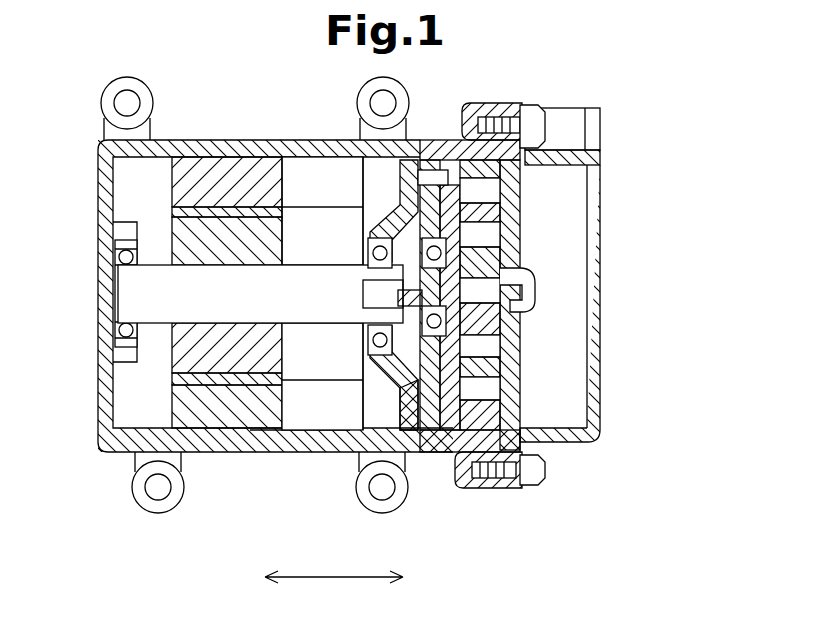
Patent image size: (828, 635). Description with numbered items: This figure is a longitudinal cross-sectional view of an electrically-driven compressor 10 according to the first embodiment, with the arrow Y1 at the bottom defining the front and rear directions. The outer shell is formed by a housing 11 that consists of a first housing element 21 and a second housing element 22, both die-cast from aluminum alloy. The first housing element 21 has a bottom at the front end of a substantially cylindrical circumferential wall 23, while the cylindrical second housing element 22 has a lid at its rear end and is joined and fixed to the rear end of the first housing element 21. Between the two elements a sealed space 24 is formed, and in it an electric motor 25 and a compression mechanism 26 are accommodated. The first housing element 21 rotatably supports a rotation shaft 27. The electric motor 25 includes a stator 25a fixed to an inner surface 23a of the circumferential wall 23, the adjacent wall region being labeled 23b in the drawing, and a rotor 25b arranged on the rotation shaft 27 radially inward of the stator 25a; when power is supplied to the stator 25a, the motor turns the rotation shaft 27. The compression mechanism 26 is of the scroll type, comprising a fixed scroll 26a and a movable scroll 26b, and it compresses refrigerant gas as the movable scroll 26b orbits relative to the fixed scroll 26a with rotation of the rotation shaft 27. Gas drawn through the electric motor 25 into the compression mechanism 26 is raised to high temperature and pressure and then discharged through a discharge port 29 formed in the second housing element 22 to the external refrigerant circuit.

The electrically-driven compressor 10 is at (646, 116).
The housing 11 is at (548, 527).
The first housing element 21 is at (482, 488).
The second housing element 22 is at (528, 488).
The circumferential wall 23 is at (252, 447).
The inner surface 23a is at (300, 448).
The bottom wall of housing 23b is at (318, 143).
The sealed space 24 is at (363, 447).
The electric motor 25 is at (215, 150).
The stator 25a is at (267, 147).
The rotor 25b is at (283, 348).
The compression mechanism 26 is at (453, 138).
The fixed scroll 26a is at (498, 212).
The movable scroll 26b is at (418, 382).
The rotation shaft 27 is at (317, 270).
The discharge port 29 is at (590, 136).
The arrow Y1 is at (328, 578).